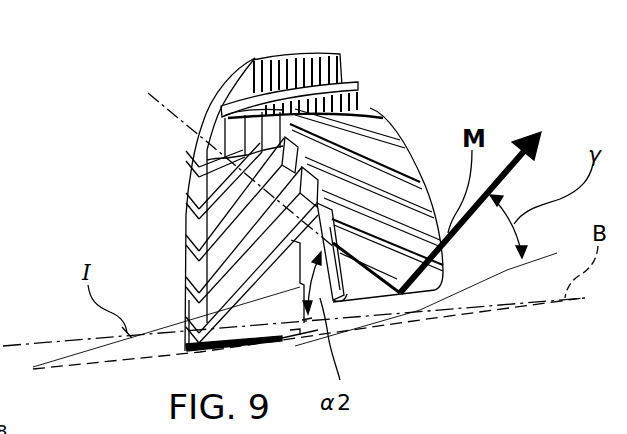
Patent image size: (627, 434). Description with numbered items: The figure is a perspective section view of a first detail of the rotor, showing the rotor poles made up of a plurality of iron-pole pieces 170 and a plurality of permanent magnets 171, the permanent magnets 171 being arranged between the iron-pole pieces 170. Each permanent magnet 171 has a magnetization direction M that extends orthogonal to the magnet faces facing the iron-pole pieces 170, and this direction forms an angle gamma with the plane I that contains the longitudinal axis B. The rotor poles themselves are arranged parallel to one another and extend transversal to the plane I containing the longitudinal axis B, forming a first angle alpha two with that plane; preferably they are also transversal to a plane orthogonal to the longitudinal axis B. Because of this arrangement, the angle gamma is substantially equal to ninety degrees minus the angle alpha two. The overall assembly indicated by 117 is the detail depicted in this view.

The tool / gear cutter 117 is at (510, 109).
The iron-pole pieces 170 is at (365, 300).
The permanent magnets 171 is at (365, 298).